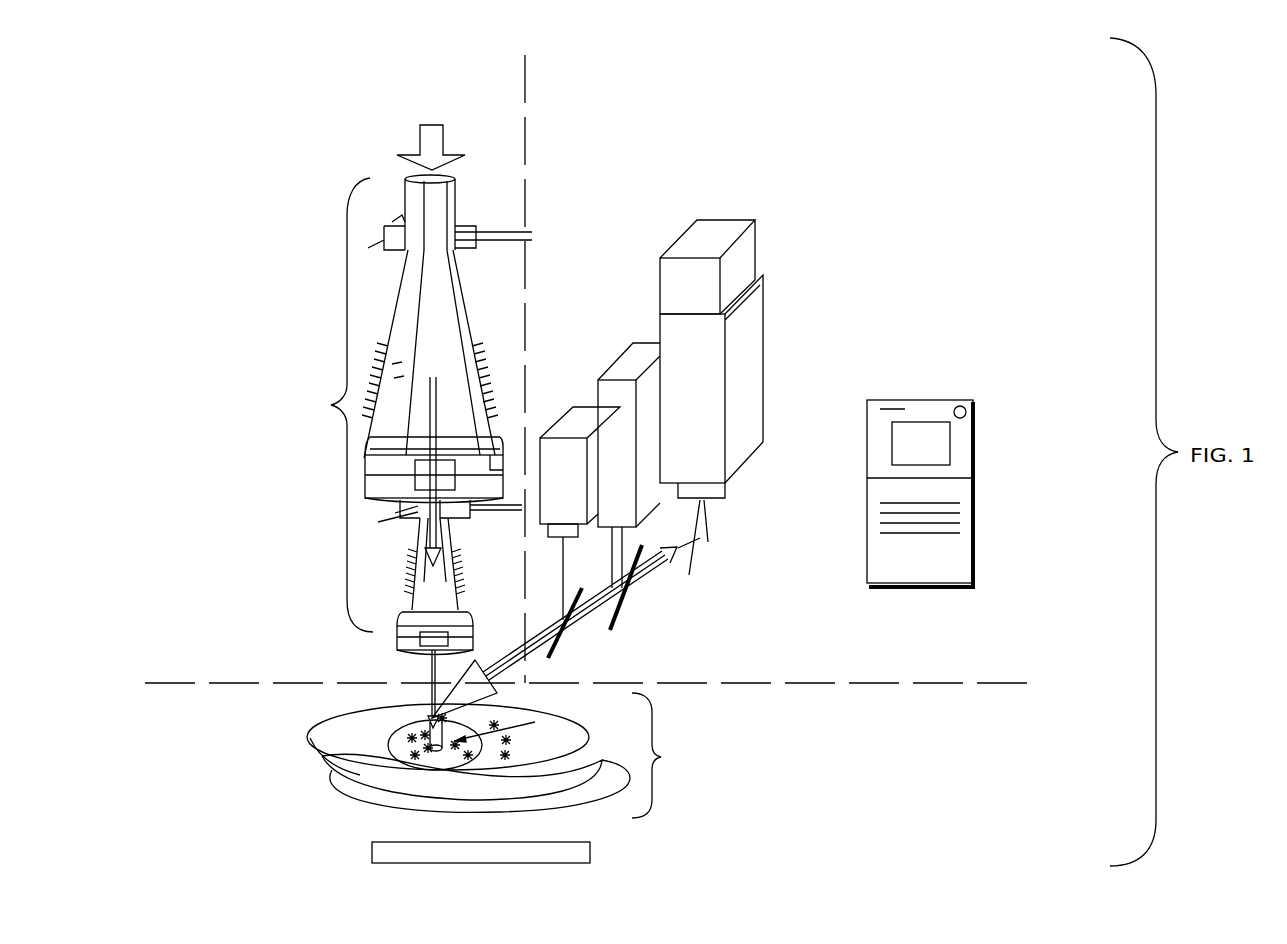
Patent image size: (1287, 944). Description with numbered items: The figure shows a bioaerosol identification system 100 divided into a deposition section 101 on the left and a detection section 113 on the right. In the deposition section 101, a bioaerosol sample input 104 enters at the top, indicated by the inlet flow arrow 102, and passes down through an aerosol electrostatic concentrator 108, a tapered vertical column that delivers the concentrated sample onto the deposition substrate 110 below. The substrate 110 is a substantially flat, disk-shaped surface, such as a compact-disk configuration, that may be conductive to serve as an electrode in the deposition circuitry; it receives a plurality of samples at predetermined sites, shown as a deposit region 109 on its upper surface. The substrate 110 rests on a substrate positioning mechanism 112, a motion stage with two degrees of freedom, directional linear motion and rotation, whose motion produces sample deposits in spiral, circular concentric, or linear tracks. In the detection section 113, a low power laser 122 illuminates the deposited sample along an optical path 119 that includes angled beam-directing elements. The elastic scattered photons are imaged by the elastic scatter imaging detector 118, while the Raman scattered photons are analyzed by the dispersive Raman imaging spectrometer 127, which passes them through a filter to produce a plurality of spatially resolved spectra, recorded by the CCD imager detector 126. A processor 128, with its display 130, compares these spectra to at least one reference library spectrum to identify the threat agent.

The system 100 is at (112, 63).
The deposition section 101 is at (288, 114).
The sample inlet flow 102 is at (434, 114).
The bioaerosol sample input 104 is at (386, 142).
The aerosol electrostatic concentrator 108 is at (324, 372).
The substrate / sample deposition surface 109 is at (322, 756).
The deposition substrate 110 is at (393, 800).
The substrate positioning mechanism 112 is at (606, 852).
The detection section 113 is at (820, 109).
The elastic scatter imaging detector 118 is at (574, 392).
The optical path / beam splitters 119 is at (580, 646).
The low power laser 122 is at (645, 331).
The CCD imager detector 126 is at (770, 246).
The imaging spectrometer 127 is at (780, 371).
The processor 128 is at (955, 604).
The display 130 is at (935, 445).